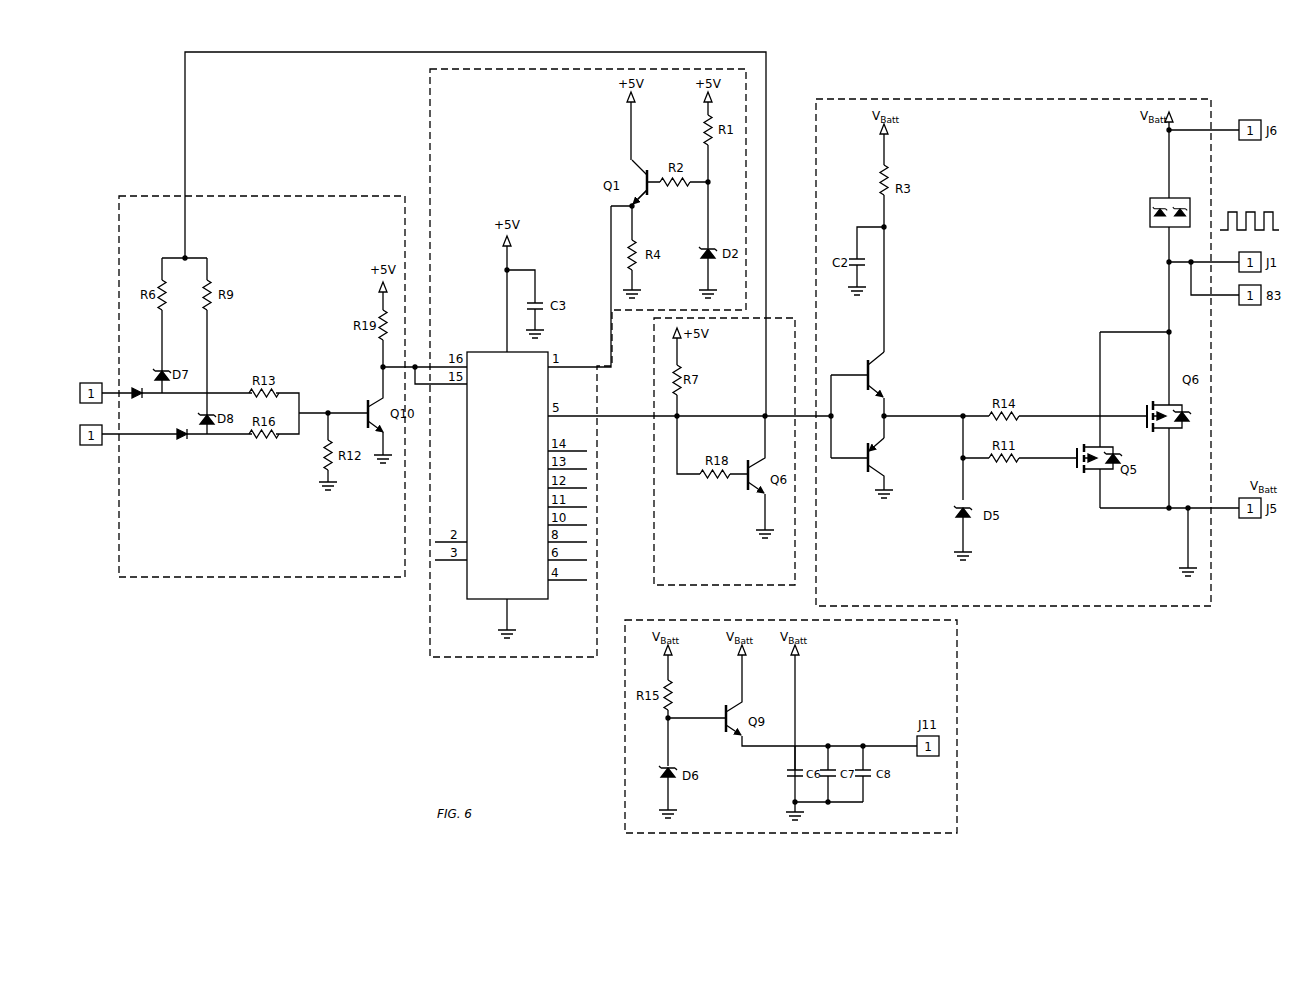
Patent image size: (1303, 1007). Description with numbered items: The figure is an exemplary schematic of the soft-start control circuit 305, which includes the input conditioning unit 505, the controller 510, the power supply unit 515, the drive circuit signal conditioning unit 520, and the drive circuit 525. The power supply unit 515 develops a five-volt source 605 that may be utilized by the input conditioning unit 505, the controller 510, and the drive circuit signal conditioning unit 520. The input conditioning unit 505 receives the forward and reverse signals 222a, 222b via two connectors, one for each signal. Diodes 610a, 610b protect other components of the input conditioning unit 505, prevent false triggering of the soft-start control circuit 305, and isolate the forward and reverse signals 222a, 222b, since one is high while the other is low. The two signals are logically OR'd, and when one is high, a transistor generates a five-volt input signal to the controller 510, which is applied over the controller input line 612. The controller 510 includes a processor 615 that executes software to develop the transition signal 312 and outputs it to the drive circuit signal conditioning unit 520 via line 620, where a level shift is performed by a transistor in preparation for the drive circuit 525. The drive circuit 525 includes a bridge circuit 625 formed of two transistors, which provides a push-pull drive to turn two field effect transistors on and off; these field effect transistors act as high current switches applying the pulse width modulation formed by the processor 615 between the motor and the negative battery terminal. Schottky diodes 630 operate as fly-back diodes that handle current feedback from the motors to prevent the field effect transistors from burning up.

The soft-start control circuit 305 is at (848, 73).
The input conditioning unit 505 is at (243, 196).
The controller 510 is at (430, 118).
The power supply unit 515 is at (957, 672).
The drive circuit signal conditioning unit 520 is at (655, 592).
The drive circuit 525 is at (1027, 99).
The forward signal 222a is at (78, 385).
The reverse signal 222b is at (78, 442).
The diode 610a is at (150, 408).
The diode 610b is at (200, 446).
The controller input line 612 is at (440, 362).
The processor 615 is at (553, 362).
The line 620 is at (608, 418).
The bridge circuit 625 is at (897, 348).
The Schottky diodes 630 is at (1140, 210).
The five-volt source 605 is at (800, 678).
The transition signal 312 is at (1246, 214).